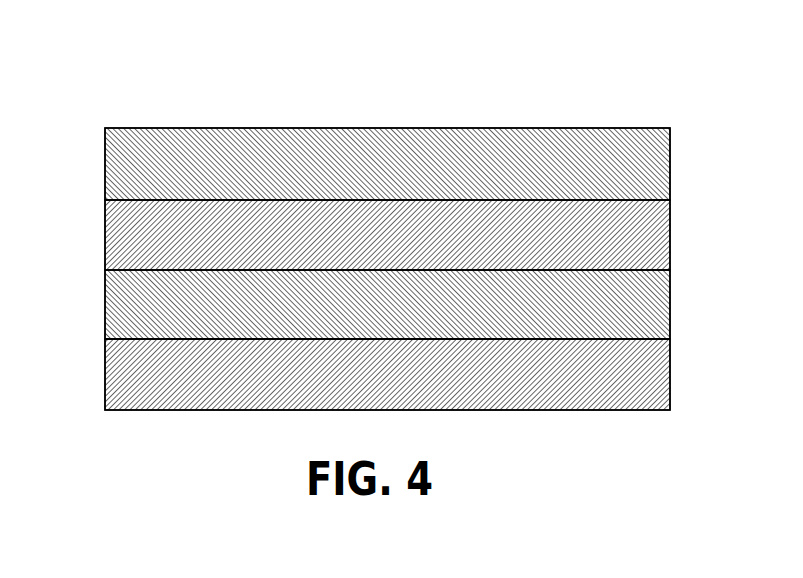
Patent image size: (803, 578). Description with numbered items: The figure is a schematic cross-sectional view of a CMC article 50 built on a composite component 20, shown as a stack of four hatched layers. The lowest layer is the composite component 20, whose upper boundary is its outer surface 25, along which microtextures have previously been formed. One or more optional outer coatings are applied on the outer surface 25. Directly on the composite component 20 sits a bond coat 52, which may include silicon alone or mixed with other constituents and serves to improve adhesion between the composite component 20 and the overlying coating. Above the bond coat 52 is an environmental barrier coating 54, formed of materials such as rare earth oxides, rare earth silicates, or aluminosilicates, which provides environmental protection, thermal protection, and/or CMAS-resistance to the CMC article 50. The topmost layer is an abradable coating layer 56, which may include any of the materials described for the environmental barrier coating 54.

The CMC article 50 is at (117, 54).
The abradable coating layer 56 is at (115, 170).
The environmental barrier coating 54 is at (117, 243).
The bond coat 52 is at (117, 315).
The composite component 20 is at (667, 388).
The outer surface 25 is at (637, 322).